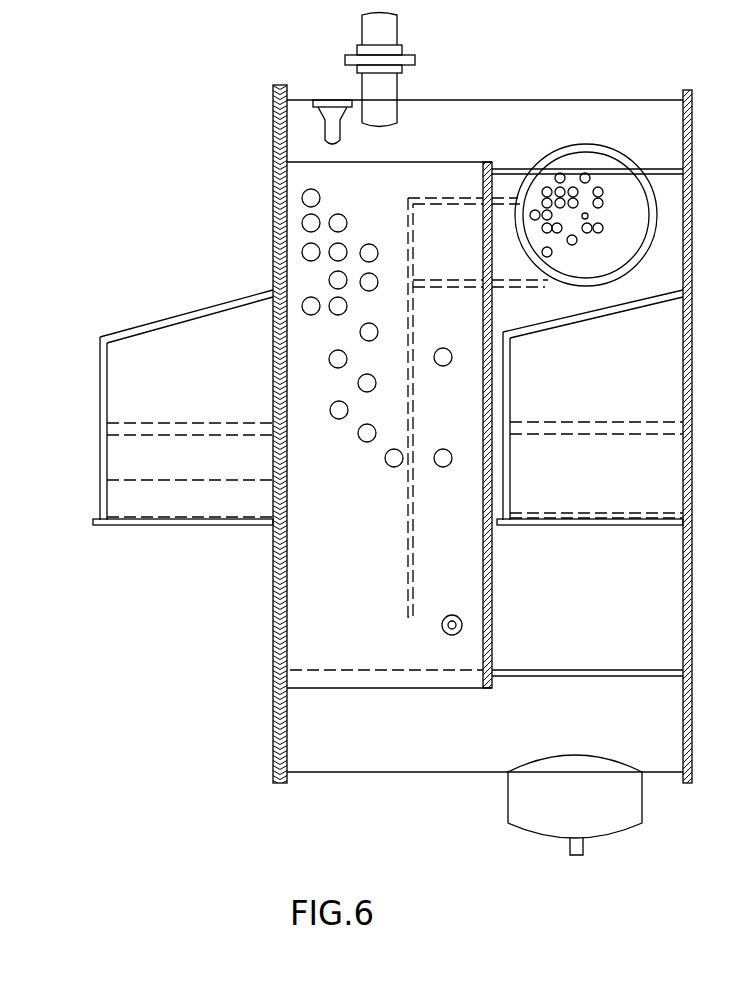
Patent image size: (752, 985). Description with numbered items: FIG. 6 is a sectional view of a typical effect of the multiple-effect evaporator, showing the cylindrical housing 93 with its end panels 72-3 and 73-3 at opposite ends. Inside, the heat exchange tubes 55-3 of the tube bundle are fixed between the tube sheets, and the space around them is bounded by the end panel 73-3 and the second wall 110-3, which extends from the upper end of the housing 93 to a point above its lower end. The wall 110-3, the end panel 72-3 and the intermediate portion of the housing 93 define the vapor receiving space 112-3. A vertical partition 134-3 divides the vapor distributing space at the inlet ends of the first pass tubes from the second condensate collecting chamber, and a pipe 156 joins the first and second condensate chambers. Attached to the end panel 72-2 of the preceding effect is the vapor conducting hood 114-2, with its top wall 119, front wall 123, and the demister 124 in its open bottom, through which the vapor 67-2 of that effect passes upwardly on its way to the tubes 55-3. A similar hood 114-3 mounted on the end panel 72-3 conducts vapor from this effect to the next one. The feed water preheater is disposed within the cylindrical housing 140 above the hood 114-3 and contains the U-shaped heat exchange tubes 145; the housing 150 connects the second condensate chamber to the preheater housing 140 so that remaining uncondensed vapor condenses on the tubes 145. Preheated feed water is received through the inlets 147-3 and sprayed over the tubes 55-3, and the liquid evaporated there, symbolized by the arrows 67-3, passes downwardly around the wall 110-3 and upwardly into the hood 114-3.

The pipe 156 is at (333, 110).
The inlet 147-3 is at (390, 30).
The housing 150 is at (440, 198).
The cylindrical housing 140 is at (560, 152).
The heat exchange tubes 145 is at (603, 200).
The heat exchange tubes 55-3 is at (302, 252).
The top wall 119 is at (164, 320).
The second wall 110-3 is at (492, 300).
The front wall 123 is at (105, 395).
The moisture separator or demister element 124 is at (118, 463).
The vertical partition 134-3 is at (413, 532).
The vapor conducting hood 114-2 is at (110, 527).
The vapor 67-2 is at (193, 540).
The end panel 73-3 is at (288, 622).
The end panel 72-2 is at (273, 663).
The vapor receiving space 112-3 is at (560, 562).
The hood 114-3 is at (643, 524).
The arrows 67-3 is at (427, 660).
The end panel 72-3 is at (683, 728).
The cylindrical housing 93 is at (415, 772).